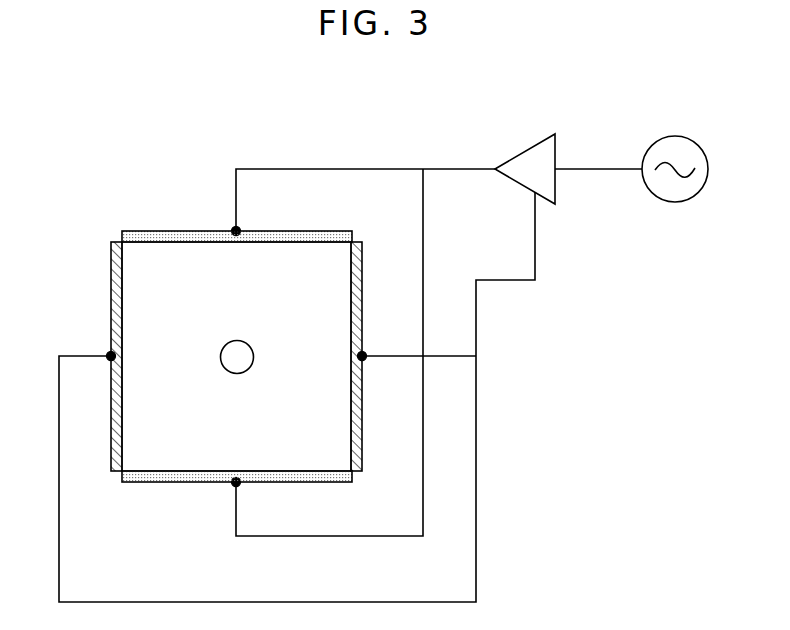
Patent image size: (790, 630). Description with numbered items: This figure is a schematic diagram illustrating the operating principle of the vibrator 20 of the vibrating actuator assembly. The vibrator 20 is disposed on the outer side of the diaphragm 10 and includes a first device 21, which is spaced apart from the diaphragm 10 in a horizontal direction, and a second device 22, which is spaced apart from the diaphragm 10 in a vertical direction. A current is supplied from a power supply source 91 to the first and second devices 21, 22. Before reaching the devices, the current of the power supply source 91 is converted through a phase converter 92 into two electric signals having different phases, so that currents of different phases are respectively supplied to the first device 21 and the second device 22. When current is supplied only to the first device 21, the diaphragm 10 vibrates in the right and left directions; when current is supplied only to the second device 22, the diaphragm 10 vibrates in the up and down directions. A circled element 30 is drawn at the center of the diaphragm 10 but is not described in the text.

The diaphragm 10 is at (330, 437).
The vibrator 20 is at (98, 170).
The first device 21 is at (112, 267).
The second device 22 is at (145, 232).
The particle / object 30 is at (244, 361).
The power supply source 91 is at (677, 135).
The phase converter 92 is at (525, 148).